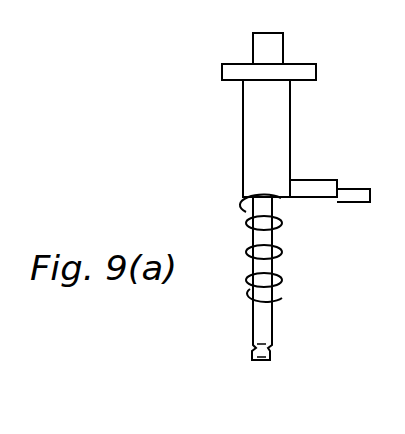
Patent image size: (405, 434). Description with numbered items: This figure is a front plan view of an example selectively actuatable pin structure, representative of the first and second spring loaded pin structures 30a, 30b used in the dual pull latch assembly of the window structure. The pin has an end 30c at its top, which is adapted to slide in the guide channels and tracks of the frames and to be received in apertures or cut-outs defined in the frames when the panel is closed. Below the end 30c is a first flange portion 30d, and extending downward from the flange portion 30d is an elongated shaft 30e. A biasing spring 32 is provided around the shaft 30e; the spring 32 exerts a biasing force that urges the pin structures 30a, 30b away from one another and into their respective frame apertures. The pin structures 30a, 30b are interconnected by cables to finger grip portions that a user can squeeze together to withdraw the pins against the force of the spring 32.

The spring loaded pin structure 30a is at (203, 136).
The spring loaded pin structure 30b is at (266, 138).
The end 30c is at (268, 33).
The first flange portion 30d is at (222, 72).
The shaft 30e is at (259, 318).
The biasing spring 32 is at (283, 238).